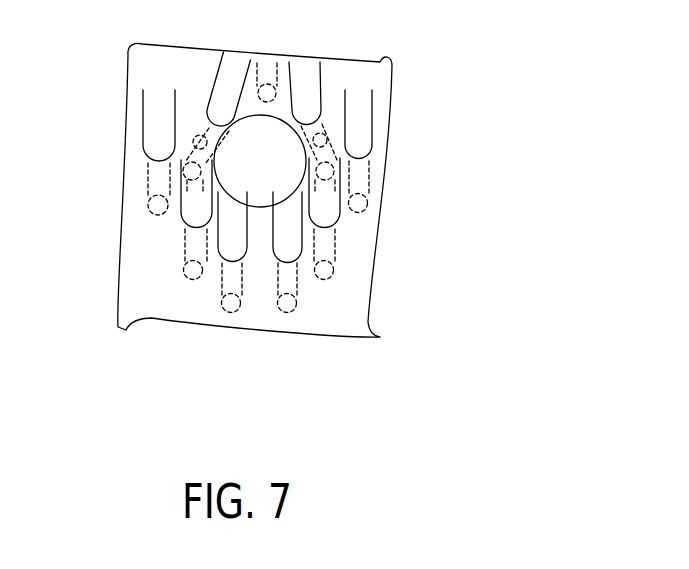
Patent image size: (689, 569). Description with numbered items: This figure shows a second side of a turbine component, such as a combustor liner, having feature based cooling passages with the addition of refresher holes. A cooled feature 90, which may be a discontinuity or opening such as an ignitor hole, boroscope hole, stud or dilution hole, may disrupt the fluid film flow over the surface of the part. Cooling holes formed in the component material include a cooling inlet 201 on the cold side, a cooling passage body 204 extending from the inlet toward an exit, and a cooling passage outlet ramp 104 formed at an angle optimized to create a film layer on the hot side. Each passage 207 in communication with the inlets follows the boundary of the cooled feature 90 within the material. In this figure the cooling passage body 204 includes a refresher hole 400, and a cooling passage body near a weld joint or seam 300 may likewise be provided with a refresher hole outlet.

The weld joint or seam 300 is at (350, 391).
The cooled feature 90 is at (267, 145).
The cooling passage outlet ramp 104 is at (158, 128).
The cooling passage body 204 is at (142, 180).
The passage 207 is at (203, 123).
The refresher hole 400 is at (321, 128).
The cooling inlet 201 is at (325, 280).